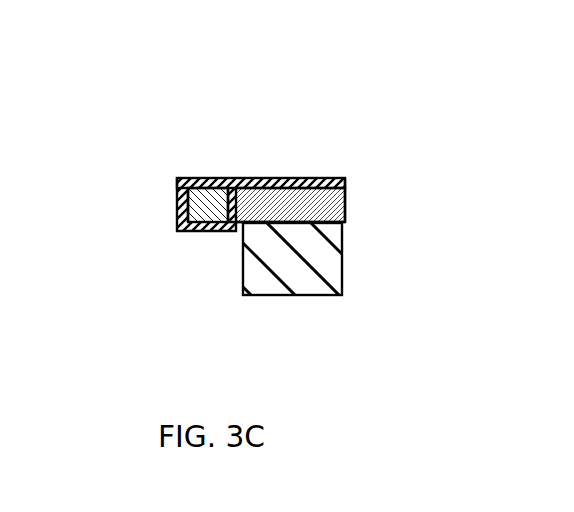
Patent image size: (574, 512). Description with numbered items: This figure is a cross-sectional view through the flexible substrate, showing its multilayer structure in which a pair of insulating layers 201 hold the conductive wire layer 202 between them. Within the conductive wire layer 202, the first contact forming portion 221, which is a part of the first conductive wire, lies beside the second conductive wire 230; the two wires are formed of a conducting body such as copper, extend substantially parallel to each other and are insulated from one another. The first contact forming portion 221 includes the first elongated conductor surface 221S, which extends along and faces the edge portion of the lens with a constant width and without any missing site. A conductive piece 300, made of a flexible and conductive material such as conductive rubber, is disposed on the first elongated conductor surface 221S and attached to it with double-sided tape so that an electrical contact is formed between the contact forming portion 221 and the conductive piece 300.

The insulating layer 201 is at (173, 183).
The conductive wire layer 202 is at (172, 188).
The first contact forming portion 221 is at (288, 205).
The first elongated conductor surface 221S is at (302, 224).
The second conductive wire 230 is at (203, 202).
The conductive piece 300 is at (293, 295).